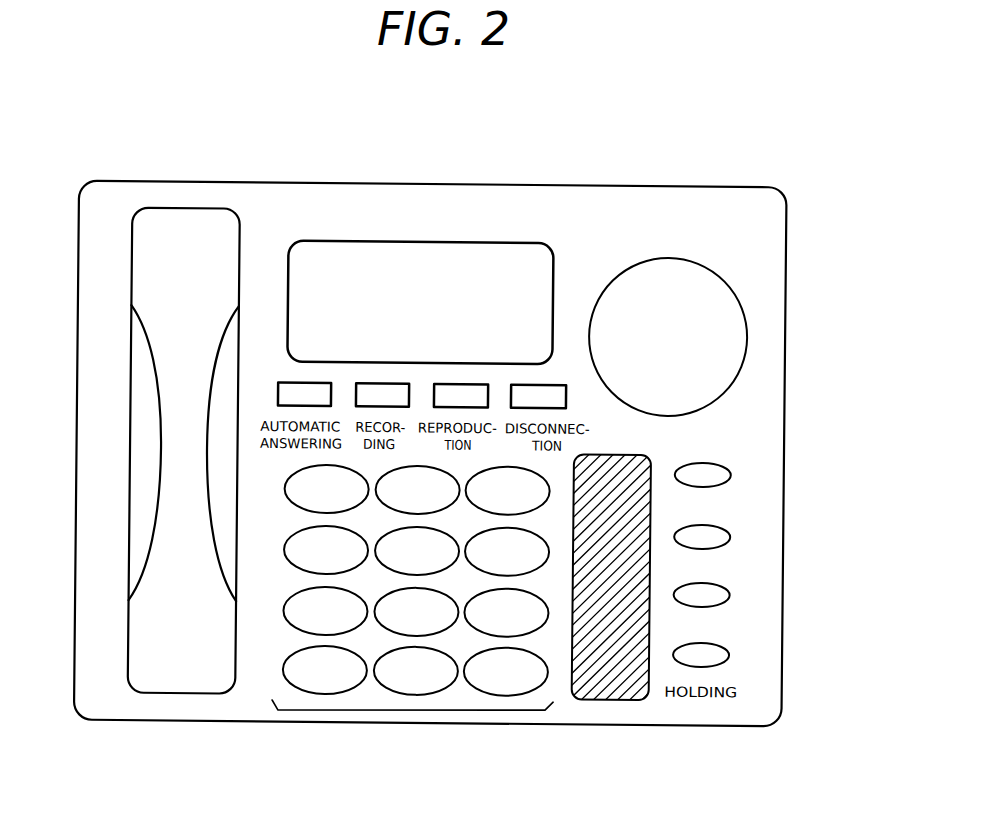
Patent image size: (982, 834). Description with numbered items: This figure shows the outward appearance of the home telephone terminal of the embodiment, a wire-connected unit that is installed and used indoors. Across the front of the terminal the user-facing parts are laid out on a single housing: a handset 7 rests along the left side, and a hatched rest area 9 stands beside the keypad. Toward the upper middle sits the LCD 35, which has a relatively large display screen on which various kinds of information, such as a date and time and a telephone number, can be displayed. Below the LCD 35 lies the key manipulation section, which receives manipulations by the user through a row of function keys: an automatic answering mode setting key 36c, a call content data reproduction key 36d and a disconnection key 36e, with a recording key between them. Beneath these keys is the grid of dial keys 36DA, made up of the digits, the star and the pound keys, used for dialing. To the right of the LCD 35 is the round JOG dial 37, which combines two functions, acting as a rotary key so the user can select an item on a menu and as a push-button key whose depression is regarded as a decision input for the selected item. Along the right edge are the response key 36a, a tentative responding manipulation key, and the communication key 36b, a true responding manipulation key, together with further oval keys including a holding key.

The handset 7 is at (188, 695).
The hook switch / handset rest 9 is at (615, 678).
The LCD 35 is at (363, 240).
The response key 36a is at (732, 475).
The communication key 36b is at (732, 537).
The automatic answering mode setting key 36c is at (306, 383).
The call content data reproduction key 36d is at (462, 382).
The disconnection key 36e is at (530, 383).
The dial keys 36DA is at (415, 710).
The JOG dial 37 is at (747, 343).